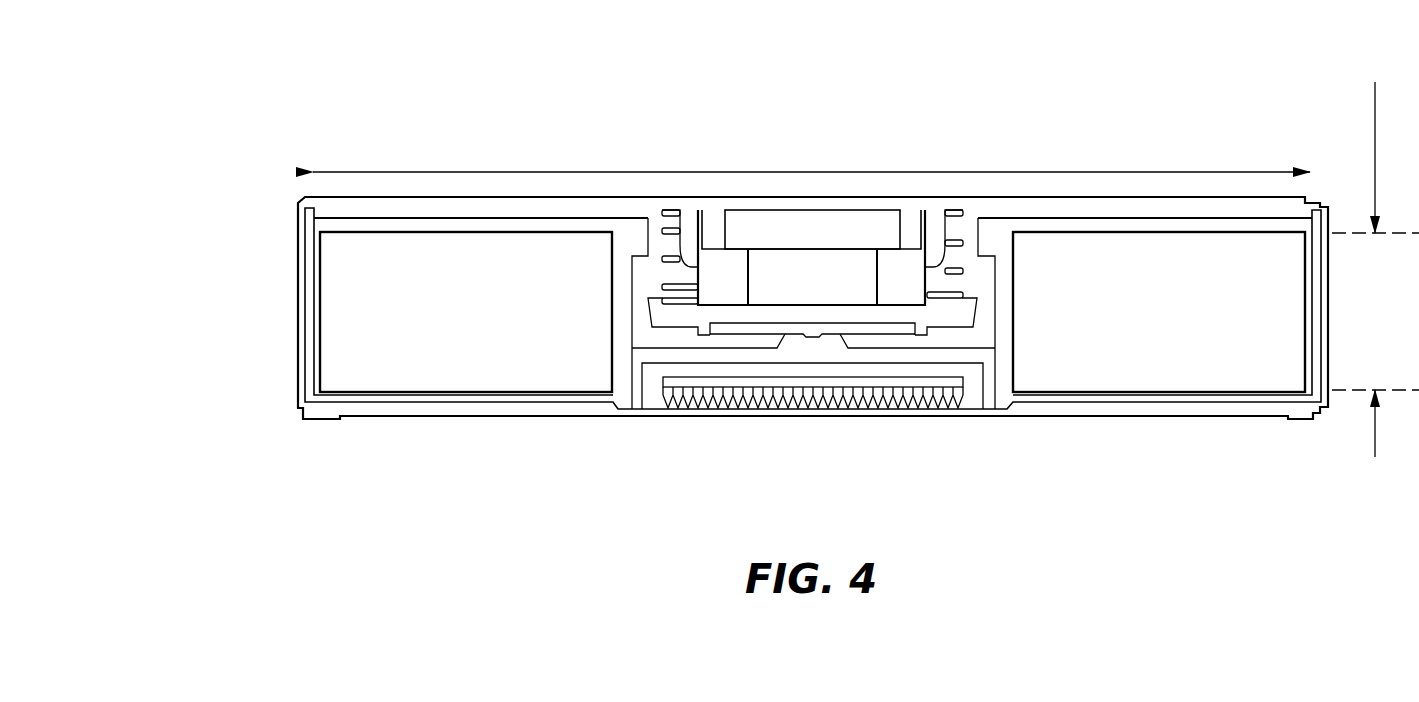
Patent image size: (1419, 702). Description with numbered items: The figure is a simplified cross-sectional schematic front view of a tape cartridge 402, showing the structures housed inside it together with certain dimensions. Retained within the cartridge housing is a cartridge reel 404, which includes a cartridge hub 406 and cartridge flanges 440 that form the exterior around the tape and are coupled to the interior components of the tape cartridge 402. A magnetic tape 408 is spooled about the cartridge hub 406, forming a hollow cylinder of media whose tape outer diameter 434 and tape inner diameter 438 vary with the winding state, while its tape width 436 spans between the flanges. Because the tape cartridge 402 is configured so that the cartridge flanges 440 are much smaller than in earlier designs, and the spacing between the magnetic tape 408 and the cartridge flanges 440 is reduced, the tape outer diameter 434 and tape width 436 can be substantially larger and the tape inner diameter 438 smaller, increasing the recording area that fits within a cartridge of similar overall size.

The tape cartridge 402 is at (228, 104).
The cartridge reel 404 is at (160, 283).
The cartridge hub 406 is at (618, 295).
The magnetic tape 408 is at (377, 357).
The tape outer diameter 434 is at (832, 160).
The tape width 436 is at (1394, 72).
The tape inner diameter 438 is at (1008, 438).
The cartridge flanges 440 is at (327, 223).